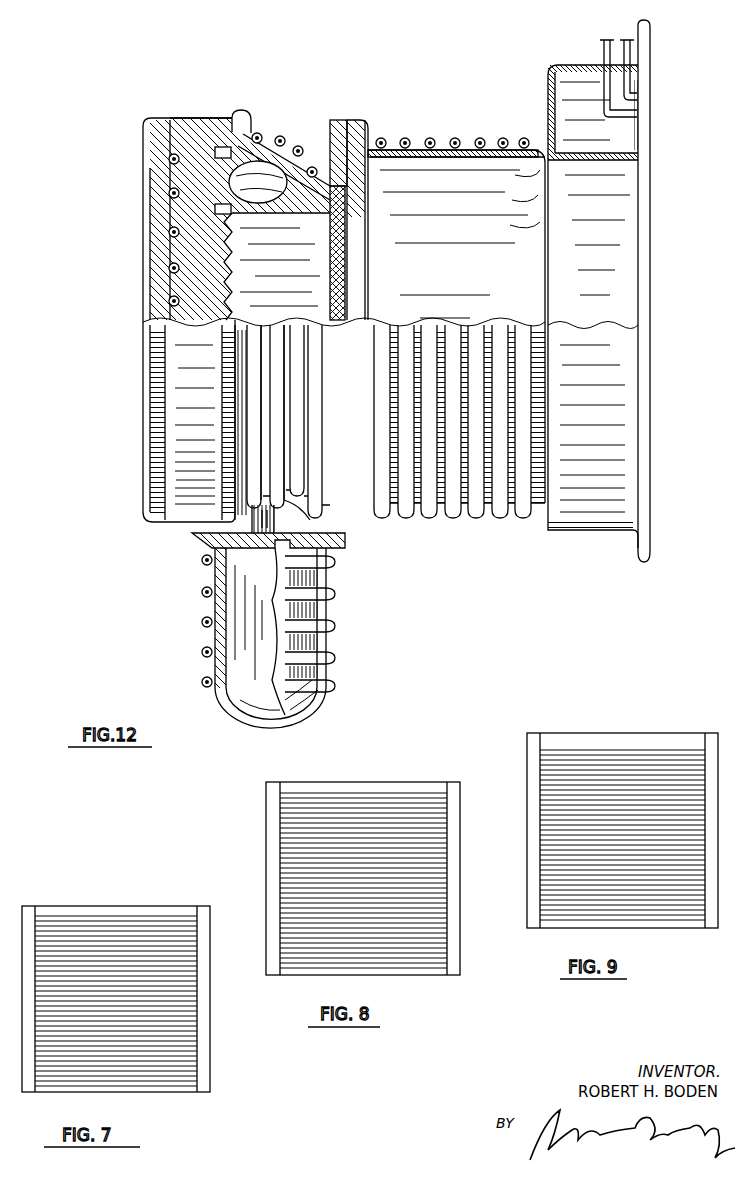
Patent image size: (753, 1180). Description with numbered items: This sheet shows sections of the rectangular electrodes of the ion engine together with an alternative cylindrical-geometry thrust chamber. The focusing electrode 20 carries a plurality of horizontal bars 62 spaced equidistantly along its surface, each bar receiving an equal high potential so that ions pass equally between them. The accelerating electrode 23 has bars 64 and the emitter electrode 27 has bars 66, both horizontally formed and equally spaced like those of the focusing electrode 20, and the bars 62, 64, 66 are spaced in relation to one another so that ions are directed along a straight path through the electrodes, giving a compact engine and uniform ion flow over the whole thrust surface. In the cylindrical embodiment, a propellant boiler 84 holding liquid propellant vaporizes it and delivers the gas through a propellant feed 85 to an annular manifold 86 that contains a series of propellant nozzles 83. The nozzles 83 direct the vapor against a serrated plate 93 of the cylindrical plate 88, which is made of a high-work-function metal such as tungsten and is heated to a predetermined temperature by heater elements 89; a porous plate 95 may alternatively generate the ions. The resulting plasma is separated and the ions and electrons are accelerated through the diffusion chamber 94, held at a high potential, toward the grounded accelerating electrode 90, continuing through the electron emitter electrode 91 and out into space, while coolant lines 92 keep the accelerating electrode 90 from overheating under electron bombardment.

In FIG. 7, the focusing electrode 20 is at (116, 980).
In FIG. 7, the horizontal bars 62 is at (145, 940).
In FIG. 8, the accelerating electrode 23 is at (363, 860).
In FIG. 8, the bars 64 is at (305, 828).
In FIG. 9, the emitter electrode 27 is at (622, 809).
In FIG. 9, the bars 66 is at (568, 760).
In FIG. 12, the propellant nozzles 83 is at (238, 180).
In FIG. 12, the propellant boiler 84 is at (207, 648).
In FIG. 12, the propellant feed 85 is at (330, 535).
In FIG. 12, the annular manifold 86 is at (240, 128).
In FIG. 12, the plate 88 is at (192, 248).
In FIG. 12, the heater elements 89 is at (170, 193).
In FIG. 12, the accelerating electrode 90 is at (431, 137).
In FIG. 12, the electron emitter electrode 91 is at (582, 62).
In FIG. 12, the coolant lines 92 is at (484, 137).
In FIG. 12, the serrated plate 93 is at (232, 238).
In FIG. 12, the diffusion chamber 94 is at (462, 272).
In FIG. 12, the porous plate 95 is at (345, 252).